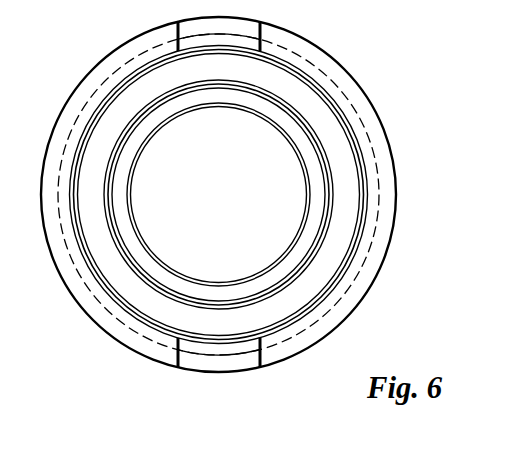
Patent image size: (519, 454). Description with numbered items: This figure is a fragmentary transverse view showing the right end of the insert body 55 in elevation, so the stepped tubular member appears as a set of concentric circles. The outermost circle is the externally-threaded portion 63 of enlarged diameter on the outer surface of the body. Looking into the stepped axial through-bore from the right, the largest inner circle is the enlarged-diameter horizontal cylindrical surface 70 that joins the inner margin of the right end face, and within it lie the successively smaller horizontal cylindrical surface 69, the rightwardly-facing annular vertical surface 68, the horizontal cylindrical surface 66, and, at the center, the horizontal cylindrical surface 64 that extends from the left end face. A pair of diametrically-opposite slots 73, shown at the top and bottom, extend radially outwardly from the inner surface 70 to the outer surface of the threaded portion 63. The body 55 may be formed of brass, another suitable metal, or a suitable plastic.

The insert body 55 is at (408, 256).
The externally-threaded portion 63 is at (396, 144).
The horizontal cylindrical surface 64 is at (221, 118).
The horizontal cylindrical surface 66 is at (278, 111).
The rightwardly-facing annular vertical surface 68 is at (308, 254).
The horizontal cylindrical surface 69 is at (129, 289).
The horizontal cylindrical surface 70 is at (88, 224).
The slots 73 is at (264, 25).